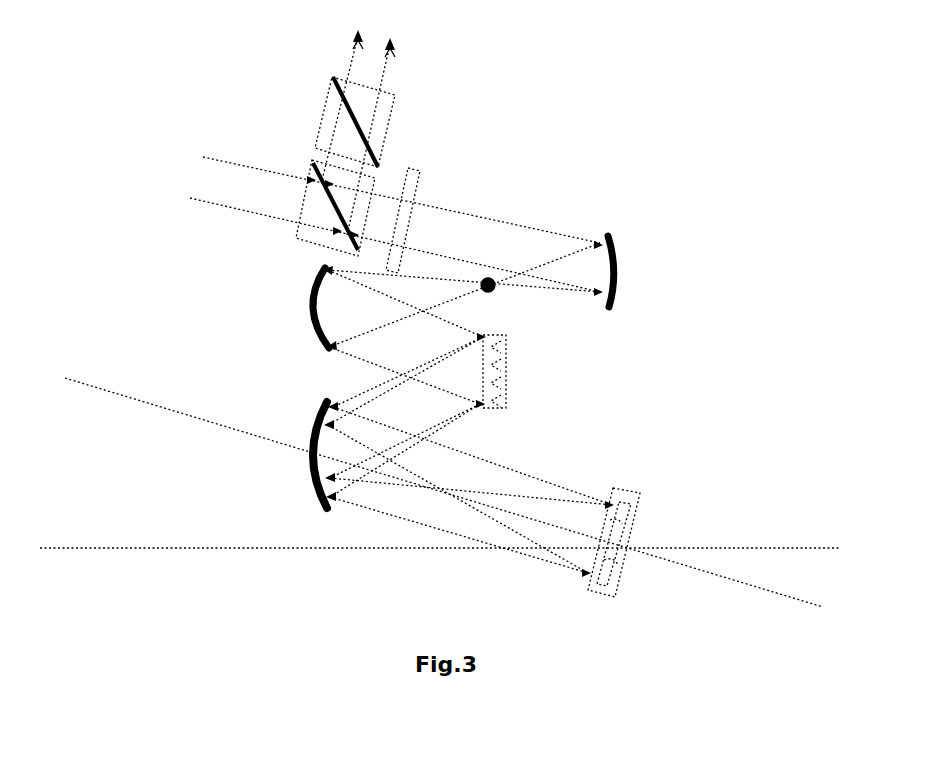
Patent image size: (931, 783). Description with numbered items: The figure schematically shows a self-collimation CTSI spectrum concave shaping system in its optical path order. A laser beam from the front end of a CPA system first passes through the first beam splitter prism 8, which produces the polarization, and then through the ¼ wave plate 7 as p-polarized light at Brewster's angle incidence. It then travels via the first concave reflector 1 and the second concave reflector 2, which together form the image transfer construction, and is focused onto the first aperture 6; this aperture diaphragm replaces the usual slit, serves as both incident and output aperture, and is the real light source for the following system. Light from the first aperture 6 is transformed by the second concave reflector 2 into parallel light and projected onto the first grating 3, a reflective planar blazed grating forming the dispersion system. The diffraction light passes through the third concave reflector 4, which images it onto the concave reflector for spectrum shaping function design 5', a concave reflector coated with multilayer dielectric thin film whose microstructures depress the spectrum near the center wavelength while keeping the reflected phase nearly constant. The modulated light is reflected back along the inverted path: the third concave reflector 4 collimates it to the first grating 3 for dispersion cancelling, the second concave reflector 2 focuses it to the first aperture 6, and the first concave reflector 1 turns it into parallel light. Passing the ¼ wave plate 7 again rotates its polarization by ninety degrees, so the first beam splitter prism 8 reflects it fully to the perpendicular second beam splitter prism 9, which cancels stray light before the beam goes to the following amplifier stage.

The first concave reflector 1 is at (628, 271).
The second concave reflector 2 is at (307, 308).
The first grating 3 is at (527, 370).
The third concave reflector 4 is at (307, 455).
The concave reflector for spectrum shaping function design 5' is at (622, 561).
The first aperture 6 is at (487, 304).
The ¼ wave plate 7 is at (415, 213).
The first beam splitter prism 8 is at (316, 216).
The second beam splitter prism 9 is at (342, 116).